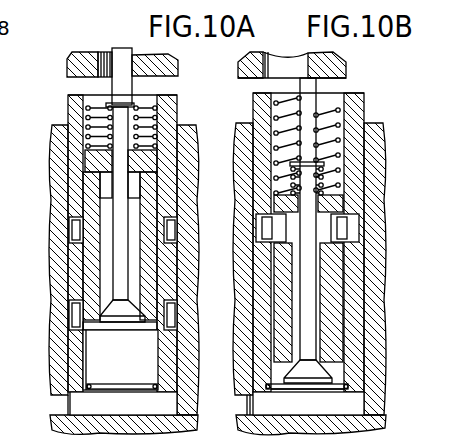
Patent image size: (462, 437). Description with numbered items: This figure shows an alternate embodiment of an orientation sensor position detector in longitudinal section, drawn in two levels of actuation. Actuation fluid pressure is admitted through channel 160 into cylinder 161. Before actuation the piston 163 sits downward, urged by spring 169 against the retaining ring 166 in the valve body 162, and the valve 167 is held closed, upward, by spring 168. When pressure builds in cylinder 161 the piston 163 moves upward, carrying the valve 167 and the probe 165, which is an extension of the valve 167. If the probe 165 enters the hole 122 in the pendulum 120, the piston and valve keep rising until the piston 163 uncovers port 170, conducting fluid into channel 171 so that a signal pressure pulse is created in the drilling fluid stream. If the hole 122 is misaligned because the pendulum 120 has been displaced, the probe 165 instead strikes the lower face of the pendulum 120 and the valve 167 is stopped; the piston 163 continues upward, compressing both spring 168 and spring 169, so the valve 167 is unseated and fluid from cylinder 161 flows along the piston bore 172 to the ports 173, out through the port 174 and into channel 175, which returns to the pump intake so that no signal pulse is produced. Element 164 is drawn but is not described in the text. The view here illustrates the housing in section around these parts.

In FIG. 10A, the pendulum 120 is at (178, 62).
In FIG. 10A, the hole 122 is at (140, 70).
In FIG. 10A, the channel 160 is at (53, 412).
In FIG. 10A, the cylinder 161 is at (129, 412).
In FIG. 10A, the valve body 162 is at (77, 353).
In FIG. 10A, the piston 163 is at (92, 206).
In FIG. 10A, the housing 164 is at (77, 166).
In FIG. 10A, the probe 165 is at (118, 88).
In FIG. 10A, the retaining ring 166 is at (82, 387).
In FIG. 10A, the valve 167 is at (120, 273).
In FIG. 10A, the spring 168 is at (93, 145).
In FIG. 10A, the spring 169 is at (88, 116).
In FIG. 10A, the port 170 is at (76, 322).
In FIG. 10A, the channel 171 is at (62, 307).
In FIG. 10B, the piston bore 172 is at (320, 347).
In FIG. 10B, the ports 173 is at (335, 223).
In FIG. 10B, the port 174 is at (355, 230).
In FIG. 10B, the channel 175 is at (374, 238).